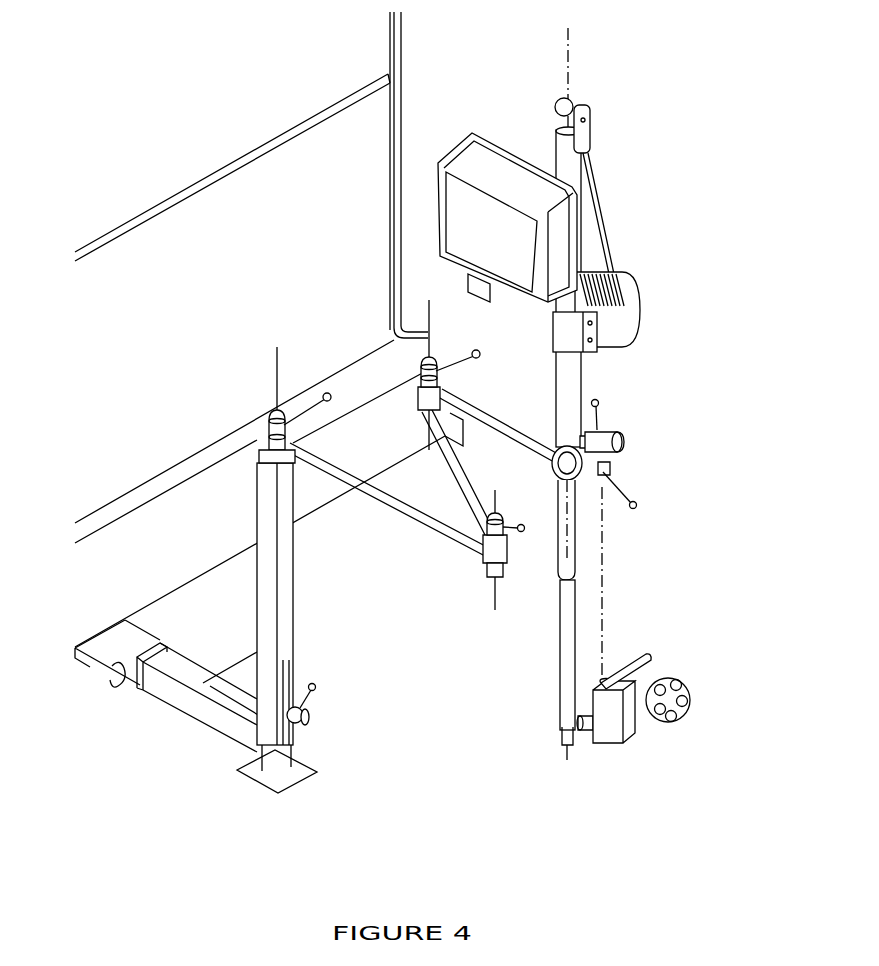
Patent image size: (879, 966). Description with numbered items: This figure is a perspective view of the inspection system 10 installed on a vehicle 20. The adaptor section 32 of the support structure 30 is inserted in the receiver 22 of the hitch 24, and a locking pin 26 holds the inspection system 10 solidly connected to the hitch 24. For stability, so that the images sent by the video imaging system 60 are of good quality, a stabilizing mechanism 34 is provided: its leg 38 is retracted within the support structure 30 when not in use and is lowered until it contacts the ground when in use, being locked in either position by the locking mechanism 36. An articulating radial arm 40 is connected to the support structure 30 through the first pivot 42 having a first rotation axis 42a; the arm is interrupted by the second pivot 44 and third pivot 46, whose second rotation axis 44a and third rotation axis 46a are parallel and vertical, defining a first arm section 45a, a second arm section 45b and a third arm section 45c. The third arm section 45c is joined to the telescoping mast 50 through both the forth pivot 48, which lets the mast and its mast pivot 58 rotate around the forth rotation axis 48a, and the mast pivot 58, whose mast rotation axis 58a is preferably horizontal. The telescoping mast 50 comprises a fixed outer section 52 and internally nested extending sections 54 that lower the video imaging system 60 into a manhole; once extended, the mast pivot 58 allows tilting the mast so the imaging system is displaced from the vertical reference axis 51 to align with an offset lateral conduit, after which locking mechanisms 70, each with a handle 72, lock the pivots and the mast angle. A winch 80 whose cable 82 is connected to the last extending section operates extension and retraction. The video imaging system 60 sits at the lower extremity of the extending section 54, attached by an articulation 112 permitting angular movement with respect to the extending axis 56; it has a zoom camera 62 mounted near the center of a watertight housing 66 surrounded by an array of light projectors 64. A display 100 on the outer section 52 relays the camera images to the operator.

The inspection system 10 is at (425, 106).
The vehicle 20 is at (207, 132).
The receiver 22 is at (103, 668).
The hitch 24 is at (127, 706).
The locking pin 26 is at (115, 690).
The support structure 30 is at (257, 618).
The adaptor section 32 is at (143, 665).
The stabilizing mechanism 34 is at (337, 775).
The locking mechanism 36 is at (305, 712).
The leg 38 is at (302, 780).
The articulating radial arm 40 is at (372, 530).
The first pivot 42 is at (260, 442).
The first rotation axis 42a is at (273, 360).
The second pivot 44 is at (487, 550).
The second rotation axis 44a is at (495, 610).
The first arm section 45a is at (417, 530).
The second arm section 45b is at (442, 466).
The third arm section 45c is at (535, 452).
The third pivot 46 is at (425, 390).
The third rotation axis 46a is at (429, 300).
The forth pivot 48 is at (567, 480).
The forth rotation axis 48a is at (603, 468).
The telescoping mast 50 is at (558, 165).
The vertical reference axis 51 is at (602, 567).
The outer section 52 is at (582, 368).
The extending sections 54 is at (575, 637).
The extending axis 56 is at (585, 284).
The mast pivot 58 is at (617, 450).
The mast rotation axis 58a is at (622, 430).
The video imaging system 60 is at (630, 750).
The camera 62 is at (687, 690).
The light projectors 64 is at (672, 717).
The housing 66 is at (663, 667).
The locking mechanism 70 is at (603, 480).
The handle 72 is at (605, 425).
The winch 80 is at (610, 285).
The cable 82 is at (600, 208).
The display 100 is at (500, 140).
The articulation 112 is at (562, 740).